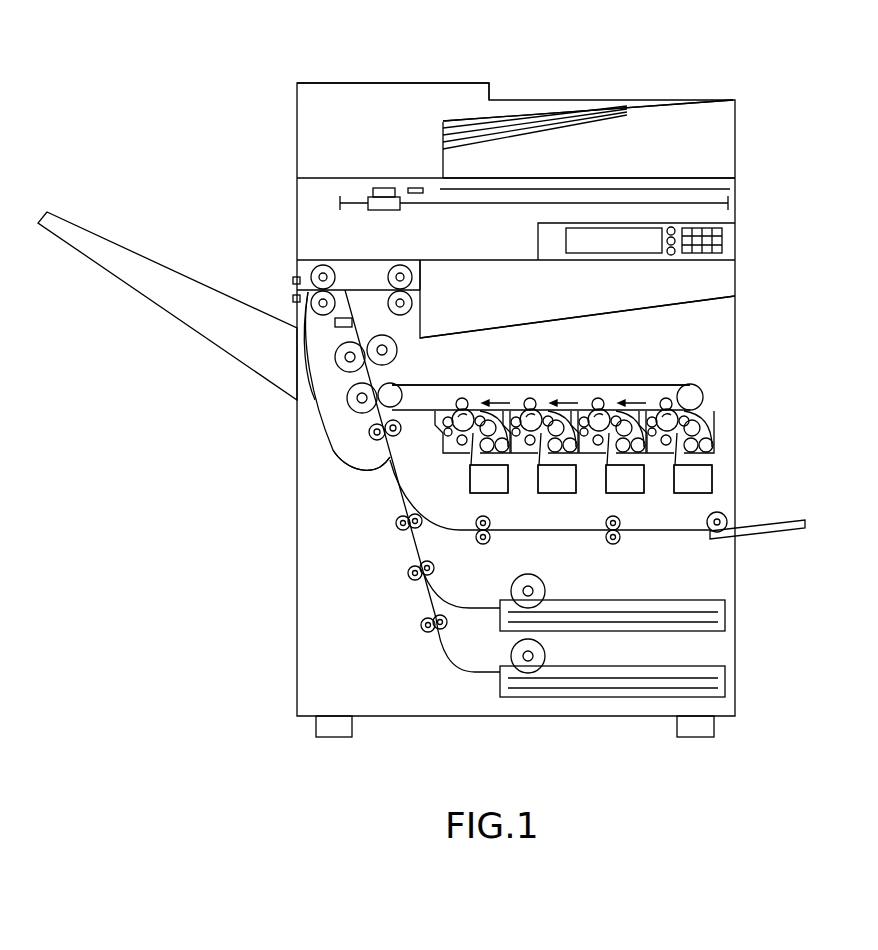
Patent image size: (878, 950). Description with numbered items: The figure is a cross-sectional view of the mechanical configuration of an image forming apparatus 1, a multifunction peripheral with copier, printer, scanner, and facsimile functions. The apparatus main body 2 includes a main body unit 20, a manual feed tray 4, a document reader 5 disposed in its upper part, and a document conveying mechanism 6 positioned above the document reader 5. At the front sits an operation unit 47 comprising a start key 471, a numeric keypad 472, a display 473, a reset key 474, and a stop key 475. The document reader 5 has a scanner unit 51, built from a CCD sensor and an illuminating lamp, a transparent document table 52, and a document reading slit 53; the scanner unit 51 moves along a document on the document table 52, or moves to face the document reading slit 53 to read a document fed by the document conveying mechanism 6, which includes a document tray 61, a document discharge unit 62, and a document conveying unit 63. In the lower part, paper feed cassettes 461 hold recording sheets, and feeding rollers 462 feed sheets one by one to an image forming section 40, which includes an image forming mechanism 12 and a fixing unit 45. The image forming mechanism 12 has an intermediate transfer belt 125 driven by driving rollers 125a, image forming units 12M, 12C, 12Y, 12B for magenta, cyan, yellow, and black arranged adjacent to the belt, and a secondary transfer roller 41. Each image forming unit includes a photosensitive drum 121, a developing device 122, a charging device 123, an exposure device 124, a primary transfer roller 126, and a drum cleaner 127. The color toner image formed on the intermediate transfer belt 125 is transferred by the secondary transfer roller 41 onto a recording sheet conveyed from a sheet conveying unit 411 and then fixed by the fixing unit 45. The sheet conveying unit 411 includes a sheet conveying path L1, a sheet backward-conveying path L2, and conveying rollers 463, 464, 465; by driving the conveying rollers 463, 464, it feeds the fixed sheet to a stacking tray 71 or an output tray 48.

The image forming apparatus 1 is at (137, 110).
The apparatus main body 2 is at (746, 177).
The manual feed tray 4 is at (795, 521).
The document reader 5 is at (319, 214).
The document conveying mechanism 6 is at (543, 92).
The image forming mechanism 12 is at (649, 371).
The image forming unit for black 12B is at (457, 472).
The image forming unit for yellow 12Y is at (523, 492).
The image forming unit for cyan 12C is at (593, 496).
The image forming unit for magenta 12M is at (733, 485).
The main body unit 20 is at (715, 336).
The image forming section 40 is at (704, 365).
The secondary transfer roller 41 is at (337, 424).
The fixing unit 45 is at (338, 358).
The operation unit 47 is at (747, 242).
The output tray 48 is at (562, 315).
The scanner unit 51 is at (385, 211).
The document table 52 is at (740, 189).
The document reading slit 53 is at (372, 190).
The document tray 61 is at (650, 100).
The document discharge unit 62 is at (665, 178).
The document conveying unit 63 is at (380, 144).
The stacking tray 71 is at (205, 344).
The photosensitive drum 121 is at (688, 400).
The developing device 122 is at (692, 418).
The charging device 123 is at (680, 448).
The exposure device 124 is at (697, 482).
The intermediate transfer belt 125 is at (493, 385).
The driving roller 125a is at (405, 387).
The primary transfer roller 126 is at (700, 386).
The drum cleaner 127 is at (633, 405).
The sheet conveying unit 411 is at (305, 405).
The paper feed cassette 461 is at (670, 600).
The feeding roller 462 is at (546, 592).
The conveying roller 463 is at (413, 266).
The conveying roller 464 is at (311, 266).
The conveying roller 465 is at (368, 436).
The start key 471 is at (670, 254).
The numeric keypad 472 is at (692, 255).
The display 473 is at (585, 245).
The reset key 474 is at (676, 231).
The stop key 475 is at (667, 240).
The sheet conveying path L1 is at (386, 474).
The sheet backward-conveying path L2 is at (298, 335).